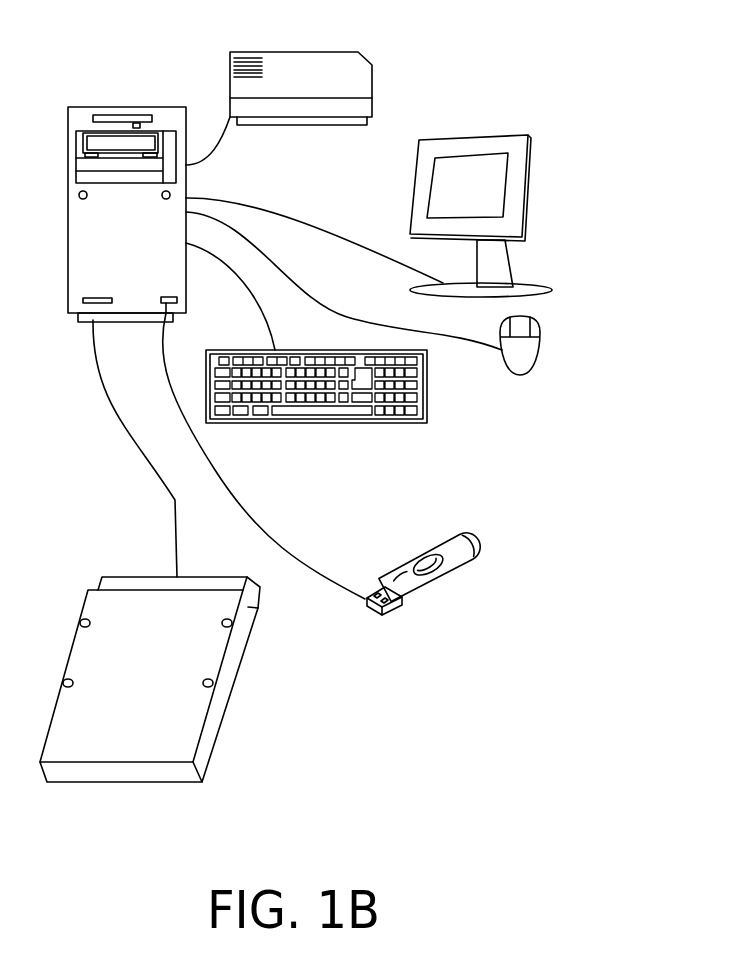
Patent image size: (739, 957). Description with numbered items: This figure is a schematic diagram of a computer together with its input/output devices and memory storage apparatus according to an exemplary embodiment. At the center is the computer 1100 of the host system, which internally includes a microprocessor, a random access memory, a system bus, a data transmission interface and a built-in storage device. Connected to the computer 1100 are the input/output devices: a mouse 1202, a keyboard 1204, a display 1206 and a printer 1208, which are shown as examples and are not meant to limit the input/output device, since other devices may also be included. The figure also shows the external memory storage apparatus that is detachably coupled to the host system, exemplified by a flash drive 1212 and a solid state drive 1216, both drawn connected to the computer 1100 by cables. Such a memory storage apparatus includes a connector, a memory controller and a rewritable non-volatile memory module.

The computer 1100 is at (128, 107).
The printer 1208 is at (295, 52).
The display 1206 is at (480, 133).
The mouse 1202 is at (539, 348).
The keyboard 1204 is at (427, 398).
The solid state drive 1216 is at (200, 561).
The flash drive 1212 is at (420, 558).